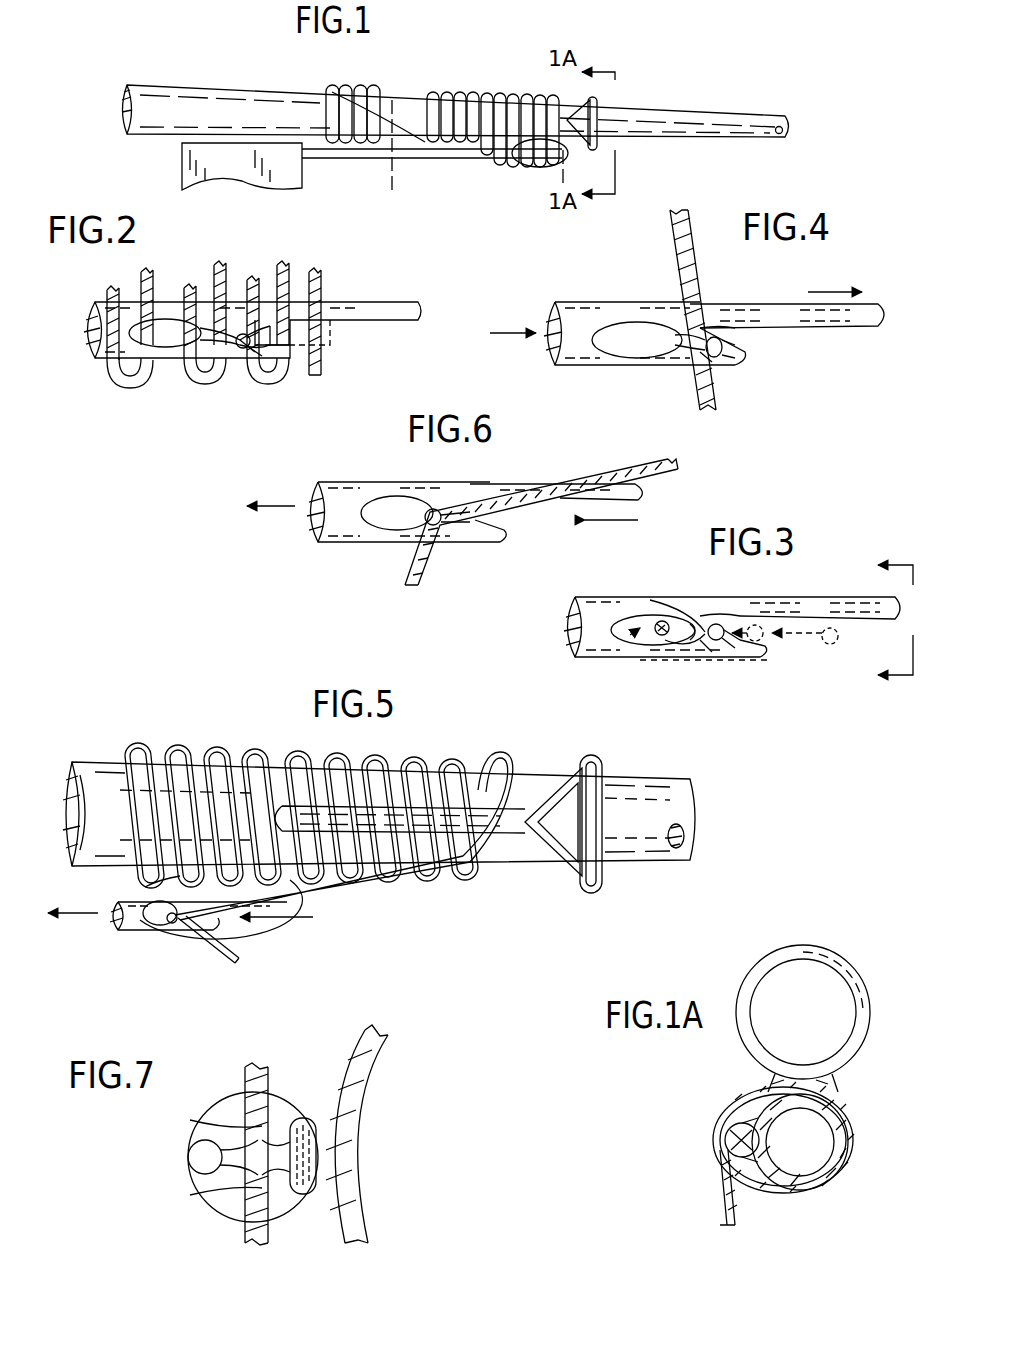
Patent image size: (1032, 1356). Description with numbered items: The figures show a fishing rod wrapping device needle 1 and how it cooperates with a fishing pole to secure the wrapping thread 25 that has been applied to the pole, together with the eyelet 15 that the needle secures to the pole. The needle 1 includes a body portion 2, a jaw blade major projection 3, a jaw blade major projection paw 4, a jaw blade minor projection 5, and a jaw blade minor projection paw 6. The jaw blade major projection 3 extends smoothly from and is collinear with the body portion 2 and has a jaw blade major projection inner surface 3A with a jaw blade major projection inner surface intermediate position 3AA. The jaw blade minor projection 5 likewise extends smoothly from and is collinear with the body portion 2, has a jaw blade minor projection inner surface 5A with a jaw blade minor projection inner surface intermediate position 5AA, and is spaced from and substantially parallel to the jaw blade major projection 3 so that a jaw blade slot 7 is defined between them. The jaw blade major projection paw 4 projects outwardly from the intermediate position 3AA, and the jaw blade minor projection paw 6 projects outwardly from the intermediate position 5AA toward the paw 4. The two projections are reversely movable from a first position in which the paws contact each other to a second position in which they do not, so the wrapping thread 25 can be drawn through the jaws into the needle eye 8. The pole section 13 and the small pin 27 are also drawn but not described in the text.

In FIG. 1, the fishing rod wrapping device needle 1 is at (405, 170).
In FIG. 2, the fishing rod wrapping device needle 1 is at (153, 382).
In FIG. 4, the fishing rod wrapping device needle 1 is at (644, 370).
In FIG. 6, the fishing rod wrapping device needle 1 is at (380, 552).
In FIG. 3, the fishing rod wrapping device needle 1 is at (806, 582).
In FIG. 5, the fishing rod wrapping device needle 1 is at (136, 943).
In FIG. 7, the fishing rod wrapping device needle 1 is at (200, 1202).
In FIG. 1A, the fishing rod wrapping device needle 1 is at (705, 1140).
In FIG. 1, the body portion 2 is at (525, 178).
In FIG. 2, the body portion 2 is at (100, 300).
In FIG. 4, the body portion 2 is at (570, 300).
In FIG. 6, the body portion 2 is at (348, 480).
In FIG. 3, the body portion 2 is at (585, 657).
In FIG. 5, the body portion 2 is at (117, 928).
In FIG. 7, the body portion 2 is at (230, 1096).
In FIG. 2, the jaw blade major projection 3 is at (375, 302).
In FIG. 4, the jaw blade major projection 3 is at (787, 292).
In FIG. 6, the jaw blade major projection 3 is at (648, 493).
In FIG. 3, the jaw blade major projection 3 is at (872, 597).
In FIG. 5, the jaw blade major projection 3 is at (292, 893).
In FIG. 7, the jaw blade major projection 3 is at (296, 1118).
In FIG. 1A, the jaw blade major projection 3 is at (746, 1124).
In FIG. 2, the jaw blade major projection inner surface 3A is at (385, 322).
In FIG. 4, the jaw blade major projection inner surface 3A is at (735, 322).
In FIG. 3, the jaw blade major projection inner surface 3A is at (845, 619).
In FIG. 2, the jaw blade major projection inner surface intermediate position 3AA is at (240, 338).
In FIG. 3, the jaw blade major projection inner surface intermediate position 3AA is at (730, 598).
In FIG. 2, the jaw blade major projection paw 4 is at (222, 335).
In FIG. 4, the jaw blade major projection paw 4 is at (690, 338).
In FIG. 3, the jaw blade major projection paw 4 is at (650, 600).
In FIG. 7, the jaw blade major projection paw 4 is at (243, 1136).
In FIG. 2, the jaw blade minor projection 5 is at (243, 350).
In FIG. 4, the jaw blade minor projection 5 is at (718, 360).
In FIG. 6, the jaw blade minor projection 5 is at (462, 542).
In FIG. 3, the jaw blade minor projection 5 is at (720, 642).
In FIG. 5, the jaw blade minor projection 5 is at (203, 932).
In FIG. 7, the jaw blade minor projection 5 is at (188, 1157).
In FIG. 1A, the jaw blade minor projection 5 is at (725, 1128).
In FIG. 2, the jaw blade minor projection inner surface 5A is at (290, 350).
In FIG. 4, the jaw blade minor projection inner surface 5A is at (735, 350).
In FIG. 3, the jaw blade minor projection inner surface 5A is at (760, 650).
In FIG. 2, the jaw blade minor projection inner surface intermediate position 5AA is at (255, 352).
In FIG. 4, the jaw blade minor projection inner surface intermediate position 5AA is at (722, 360).
In FIG. 3, the jaw blade minor projection inner surface intermediate position 5AA is at (732, 652).
In FIG. 2, the jaw blade minor projection paw 6 is at (240, 345).
In FIG. 4, the jaw blade minor projection paw 6 is at (700, 362).
In FIG. 3, the jaw blade minor projection paw 6 is at (706, 644).
In FIG. 5, the jaw blade minor projection paw 6 is at (283, 925).
In FIG. 2, the jaw blade slot 7 is at (325, 343).
In FIG. 4, the jaw blade slot 7 is at (742, 343).
In FIG. 6, the jaw blade slot 7 is at (510, 522).
In FIG. 3, the jaw blade slot 7 is at (792, 642).
In FIG. 5, the jaw blade slot 7 is at (236, 921).
In FIG. 2, the needle eye 8 is at (170, 340).
In FIG. 4, the needle eye 8 is at (622, 335).
In FIG. 6, the needle eye 8 is at (392, 512).
In FIG. 3, the needle eye 8 is at (635, 640).
In FIG. 5, the needle eye 8 is at (165, 918).
In FIG. 1, the tube 13 is at (742, 112).
In FIG. 5, the tube 13 is at (100, 760).
In FIG. 7, the tube 13 is at (358, 1077).
In FIG. 1A, the tube 13 is at (850, 1126).
In FIG. 1, the eyelet 15 is at (597, 102).
In FIG. 5, the eyelet 15 is at (594, 766).
In FIG. 1A, the eyelet 15 is at (842, 966).
In FIG. 1, the wrapping thread 25 is at (460, 92).
In FIG. 2, the wrapping thread 25 is at (135, 272).
In FIG. 4, the wrapping thread 25 is at (672, 248).
In FIG. 6, the wrapping thread 25 is at (632, 462).
In FIG. 5, the wrapping thread 25 is at (292, 750).
In FIG. 7, the wrapping thread 25 is at (264, 1068).
In FIG. 1A, the wrapping thread 25 is at (752, 1188).
In FIG. 3, the rivet 27 is at (660, 636).